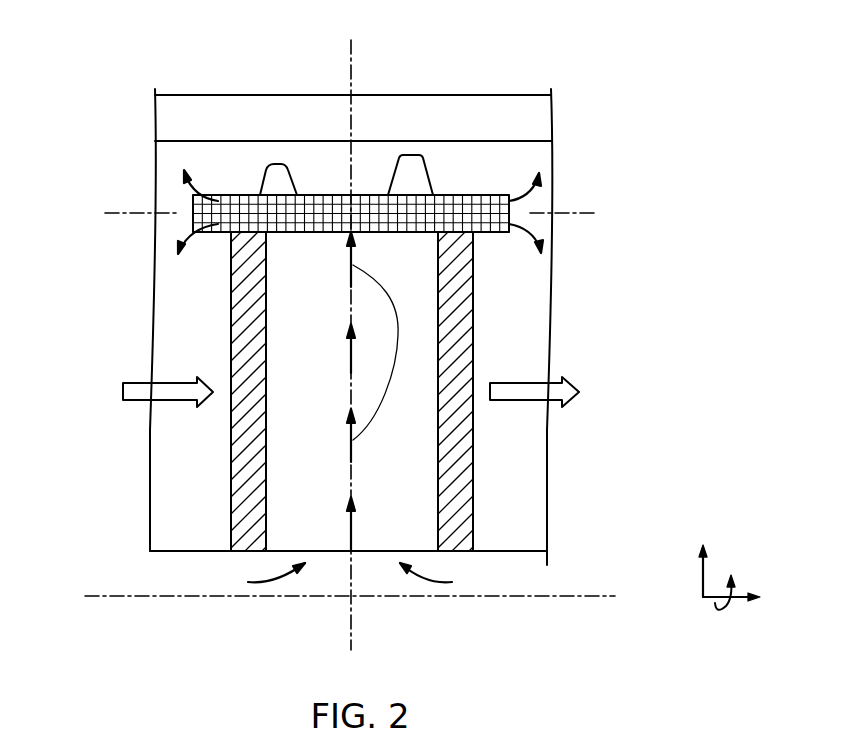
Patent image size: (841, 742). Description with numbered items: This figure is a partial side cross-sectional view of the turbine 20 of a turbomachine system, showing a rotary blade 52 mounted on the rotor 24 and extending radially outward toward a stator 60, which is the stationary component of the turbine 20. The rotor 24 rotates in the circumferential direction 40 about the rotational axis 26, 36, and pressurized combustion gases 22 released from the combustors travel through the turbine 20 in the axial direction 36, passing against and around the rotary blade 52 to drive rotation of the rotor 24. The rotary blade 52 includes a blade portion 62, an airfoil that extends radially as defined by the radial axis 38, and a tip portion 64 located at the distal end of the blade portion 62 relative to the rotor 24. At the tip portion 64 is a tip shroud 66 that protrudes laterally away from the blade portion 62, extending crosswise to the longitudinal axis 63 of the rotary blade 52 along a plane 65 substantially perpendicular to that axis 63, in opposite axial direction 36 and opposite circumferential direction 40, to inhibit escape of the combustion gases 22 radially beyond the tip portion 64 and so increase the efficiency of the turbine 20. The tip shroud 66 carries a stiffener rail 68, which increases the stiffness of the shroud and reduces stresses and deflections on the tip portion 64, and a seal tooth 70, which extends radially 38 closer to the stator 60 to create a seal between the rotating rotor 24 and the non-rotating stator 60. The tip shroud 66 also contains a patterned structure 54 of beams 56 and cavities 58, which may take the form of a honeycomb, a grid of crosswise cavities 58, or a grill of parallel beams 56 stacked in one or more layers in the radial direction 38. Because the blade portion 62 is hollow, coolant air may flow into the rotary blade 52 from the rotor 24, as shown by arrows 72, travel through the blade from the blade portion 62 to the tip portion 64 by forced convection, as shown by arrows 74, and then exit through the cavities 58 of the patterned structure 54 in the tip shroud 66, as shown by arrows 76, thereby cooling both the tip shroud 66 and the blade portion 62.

The turbine 20 is at (590, 112).
The combustion gases 22 is at (162, 403).
The rotor 24 is at (525, 551).
The rotational axis 26 is at (226, 598).
The axial direction 36 is at (735, 590).
The radial direction 38 is at (700, 574).
The circumferential direction 40 is at (726, 612).
The rotary blade 52 is at (172, 305).
The patterned structure 54 is at (460, 205).
The beams 56 is at (302, 208).
The cavities 58 is at (388, 196).
The stator 60 is at (248, 95).
The blade portion 62 is at (508, 455).
The longitudinal axis 63 is at (352, 62).
The tip portion 64 is at (497, 165).
The plane 65 is at (142, 213).
The tip shroud 66 is at (220, 236).
The stiffener rail 68 is at (262, 192).
The seal tooth 70 is at (426, 172).
The arrows 72 is at (353, 524).
The arrows 74 is at (353, 350).
The arrows 76 is at (192, 190).